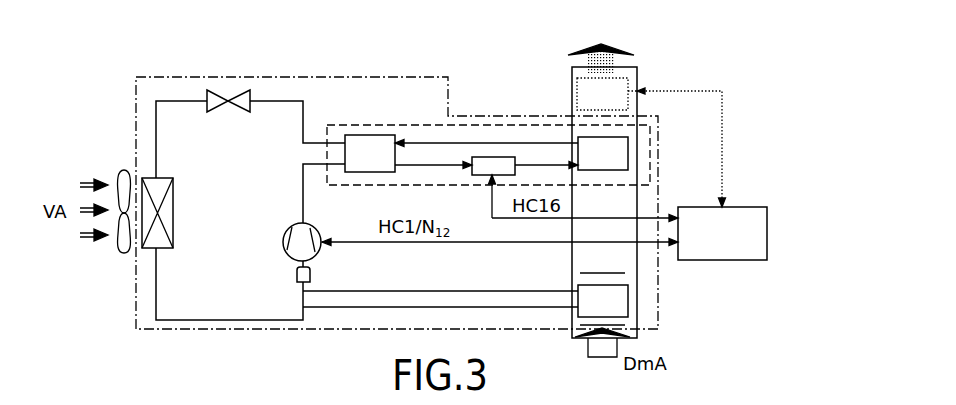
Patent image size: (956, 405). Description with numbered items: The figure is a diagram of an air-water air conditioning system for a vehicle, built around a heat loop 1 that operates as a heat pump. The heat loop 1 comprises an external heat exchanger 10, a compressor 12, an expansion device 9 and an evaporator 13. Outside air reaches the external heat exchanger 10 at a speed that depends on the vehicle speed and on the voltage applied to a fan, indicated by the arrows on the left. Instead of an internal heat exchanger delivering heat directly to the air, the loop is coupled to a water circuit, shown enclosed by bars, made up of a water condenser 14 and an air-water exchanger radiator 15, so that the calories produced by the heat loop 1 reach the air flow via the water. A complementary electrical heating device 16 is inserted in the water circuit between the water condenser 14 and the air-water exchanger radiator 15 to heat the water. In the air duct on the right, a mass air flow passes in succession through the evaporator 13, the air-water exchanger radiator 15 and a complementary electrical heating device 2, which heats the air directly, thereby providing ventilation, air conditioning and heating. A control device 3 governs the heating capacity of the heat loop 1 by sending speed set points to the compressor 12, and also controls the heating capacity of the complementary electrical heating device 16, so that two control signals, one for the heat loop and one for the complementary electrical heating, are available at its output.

The heat loop 1 is at (140, 112).
The complementary electrical heating device 2 is at (585, 88).
The control device 3 is at (745, 234).
The expansion device 9 is at (220, 93).
The external heat exchanger 10 is at (159, 239).
The compressor 12 is at (284, 246).
The evaporator 13 is at (622, 298).
The water condenser 14 is at (359, 148).
The air-water exchanger radiator 15 is at (622, 147).
The complementary electrical heating device 16 is at (486, 173).